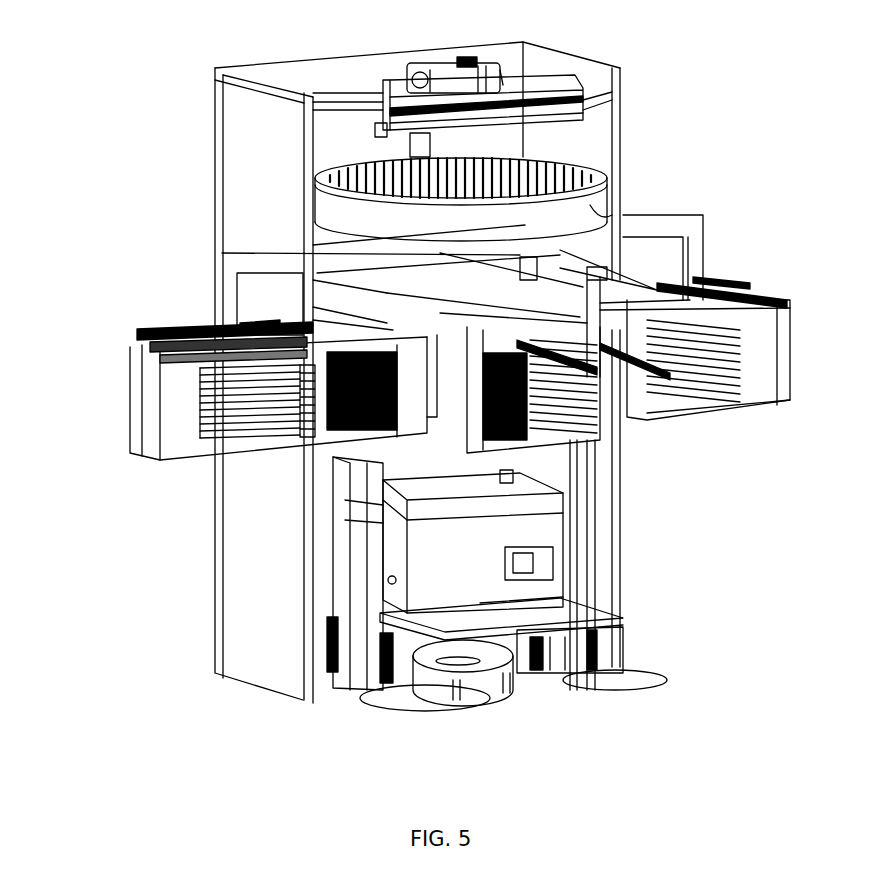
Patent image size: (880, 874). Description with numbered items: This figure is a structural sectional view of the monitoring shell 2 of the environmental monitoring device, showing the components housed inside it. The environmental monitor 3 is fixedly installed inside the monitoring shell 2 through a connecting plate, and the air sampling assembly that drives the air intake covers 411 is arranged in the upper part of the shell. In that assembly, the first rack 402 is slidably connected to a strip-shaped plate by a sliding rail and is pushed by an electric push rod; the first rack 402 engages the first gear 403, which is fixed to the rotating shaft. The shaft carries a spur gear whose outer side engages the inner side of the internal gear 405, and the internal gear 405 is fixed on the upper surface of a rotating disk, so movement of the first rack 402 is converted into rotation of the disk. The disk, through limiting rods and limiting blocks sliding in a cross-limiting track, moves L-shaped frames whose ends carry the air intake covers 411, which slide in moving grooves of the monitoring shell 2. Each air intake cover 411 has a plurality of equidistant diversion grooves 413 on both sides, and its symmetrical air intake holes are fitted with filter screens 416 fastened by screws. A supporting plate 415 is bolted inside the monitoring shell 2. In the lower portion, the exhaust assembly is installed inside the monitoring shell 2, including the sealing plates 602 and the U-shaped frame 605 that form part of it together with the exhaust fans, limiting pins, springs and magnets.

The monitoring shell 2 is at (258, 172).
The environmental monitor 3 is at (553, 545).
The first rack 402 is at (583, 108).
The first gear 403 is at (380, 103).
The internal gear 405 is at (607, 215).
The air intake cover 411 is at (170, 412).
The diversion grooves 413 is at (217, 440).
The supporting plate 415 is at (385, 290).
The filter screen 416 is at (245, 330).
The sealing plate 602 is at (637, 673).
The U-shaped frame 605 is at (345, 578).